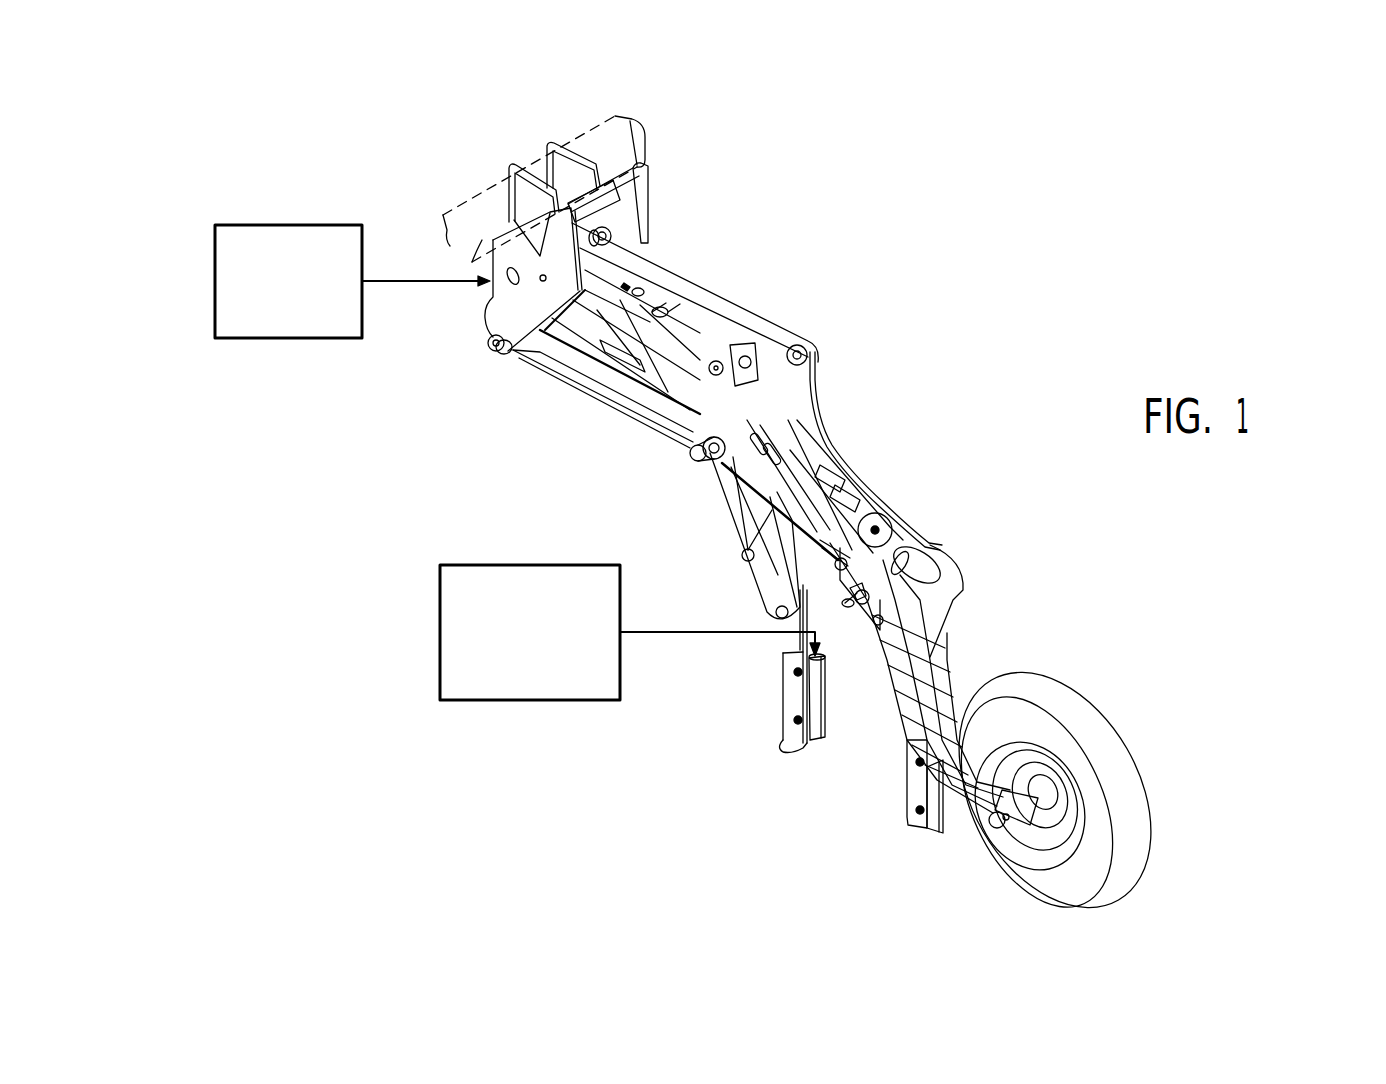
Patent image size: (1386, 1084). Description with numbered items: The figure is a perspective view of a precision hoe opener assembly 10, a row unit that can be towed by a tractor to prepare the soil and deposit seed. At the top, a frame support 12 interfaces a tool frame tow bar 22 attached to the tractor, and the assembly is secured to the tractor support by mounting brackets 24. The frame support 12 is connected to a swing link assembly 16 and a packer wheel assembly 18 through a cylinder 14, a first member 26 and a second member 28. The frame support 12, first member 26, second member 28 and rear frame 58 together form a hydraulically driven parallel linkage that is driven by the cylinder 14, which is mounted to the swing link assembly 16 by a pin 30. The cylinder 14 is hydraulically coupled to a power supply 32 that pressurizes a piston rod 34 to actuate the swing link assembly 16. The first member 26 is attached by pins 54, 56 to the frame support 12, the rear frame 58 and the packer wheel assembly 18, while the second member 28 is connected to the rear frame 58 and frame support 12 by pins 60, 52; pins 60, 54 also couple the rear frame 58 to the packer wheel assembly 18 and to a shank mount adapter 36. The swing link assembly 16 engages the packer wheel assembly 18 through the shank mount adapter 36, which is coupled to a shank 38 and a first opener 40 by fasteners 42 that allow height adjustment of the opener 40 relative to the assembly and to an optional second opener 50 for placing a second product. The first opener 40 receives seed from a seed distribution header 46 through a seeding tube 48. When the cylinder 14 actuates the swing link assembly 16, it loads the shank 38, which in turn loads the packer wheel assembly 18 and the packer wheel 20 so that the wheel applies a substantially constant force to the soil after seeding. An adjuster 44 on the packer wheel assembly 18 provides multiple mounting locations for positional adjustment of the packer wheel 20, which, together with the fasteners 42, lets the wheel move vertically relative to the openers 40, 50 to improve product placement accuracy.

The precision hoe opener assembly 10 is at (944, 333).
The frame support 12 is at (630, 208).
The cylinder 14 is at (623, 286).
The swing link assembly 16 is at (757, 393).
The packer wheel assembly 18 is at (945, 624).
The packer wheel 20 is at (1106, 696).
The tool frame tow bar 22 is at (594, 133).
The mounting brackets 24 is at (553, 143).
The first member 26 is at (708, 295).
The second member 28 is at (600, 392).
The pin 30 is at (697, 340).
The power supply 32 is at (287, 225).
The piston rod 34 is at (700, 333).
The shank mount adapter 36 is at (733, 537).
The shank 38 is at (783, 638).
The first opener 40 is at (785, 742).
The fasteners 42 is at (780, 617).
The adjuster 44 is at (803, 447).
The seed distribution header 46 is at (530, 565).
The seeding tube 48 is at (937, 800).
The second opener 50 is at (913, 827).
The pin 52 is at (488, 340).
The pin 54 is at (812, 351).
The pin 56 is at (608, 233).
The rear frame 58 is at (732, 507).
The pin 60 is at (697, 454).